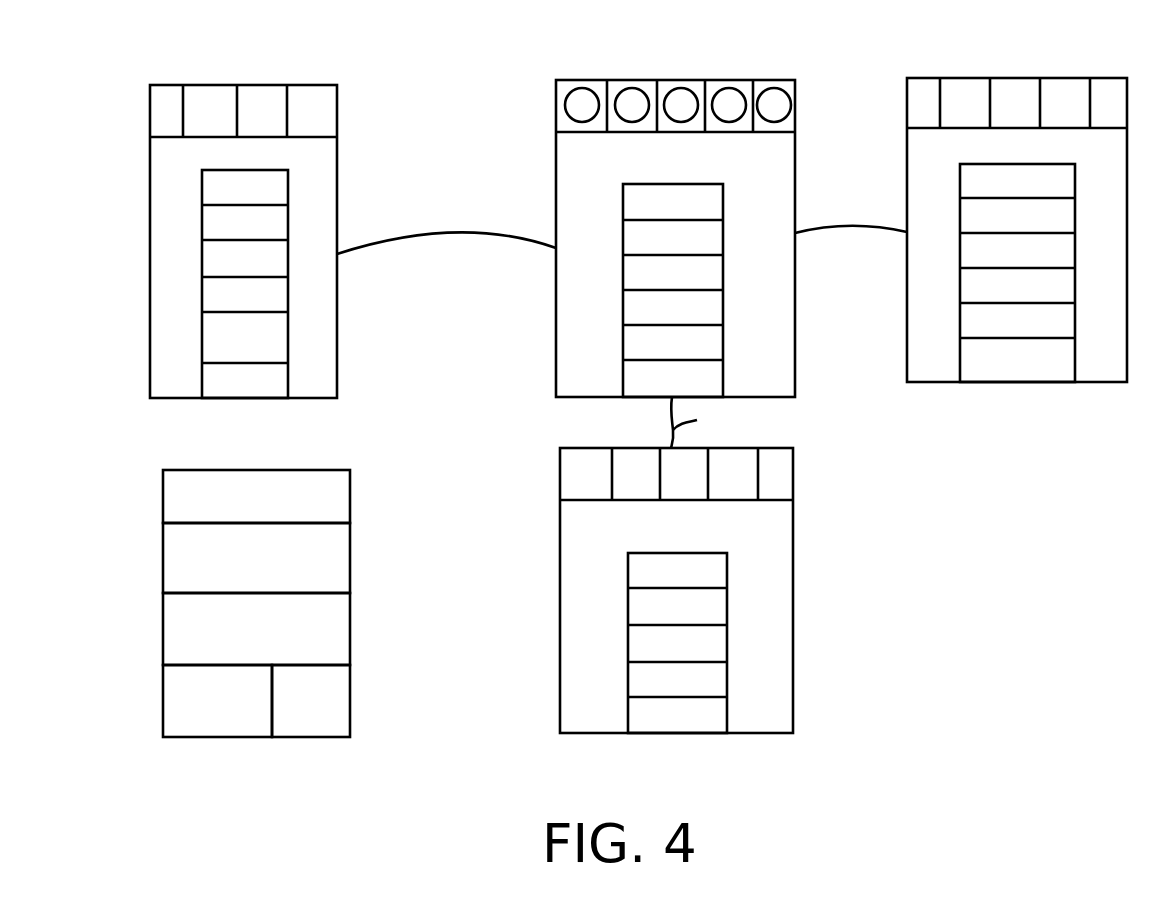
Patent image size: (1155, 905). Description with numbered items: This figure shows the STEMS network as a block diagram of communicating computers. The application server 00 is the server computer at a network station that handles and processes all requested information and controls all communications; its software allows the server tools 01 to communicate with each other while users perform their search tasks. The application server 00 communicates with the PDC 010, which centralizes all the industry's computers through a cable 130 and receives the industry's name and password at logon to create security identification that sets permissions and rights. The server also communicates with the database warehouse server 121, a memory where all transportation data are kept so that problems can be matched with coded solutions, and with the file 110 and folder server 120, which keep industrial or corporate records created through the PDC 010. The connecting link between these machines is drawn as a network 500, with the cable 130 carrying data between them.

The application server 00 is at (672, 80).
The primary domain controller (PDC) 010 is at (225, 83).
The database warehouse server 121 is at (1010, 78).
The file 110 is at (794, 555).
The folder server 120 is at (272, 712).
The server tools 01 is at (315, 272).
The cable 130 is at (418, 235).
The network 500 is at (487, 238).